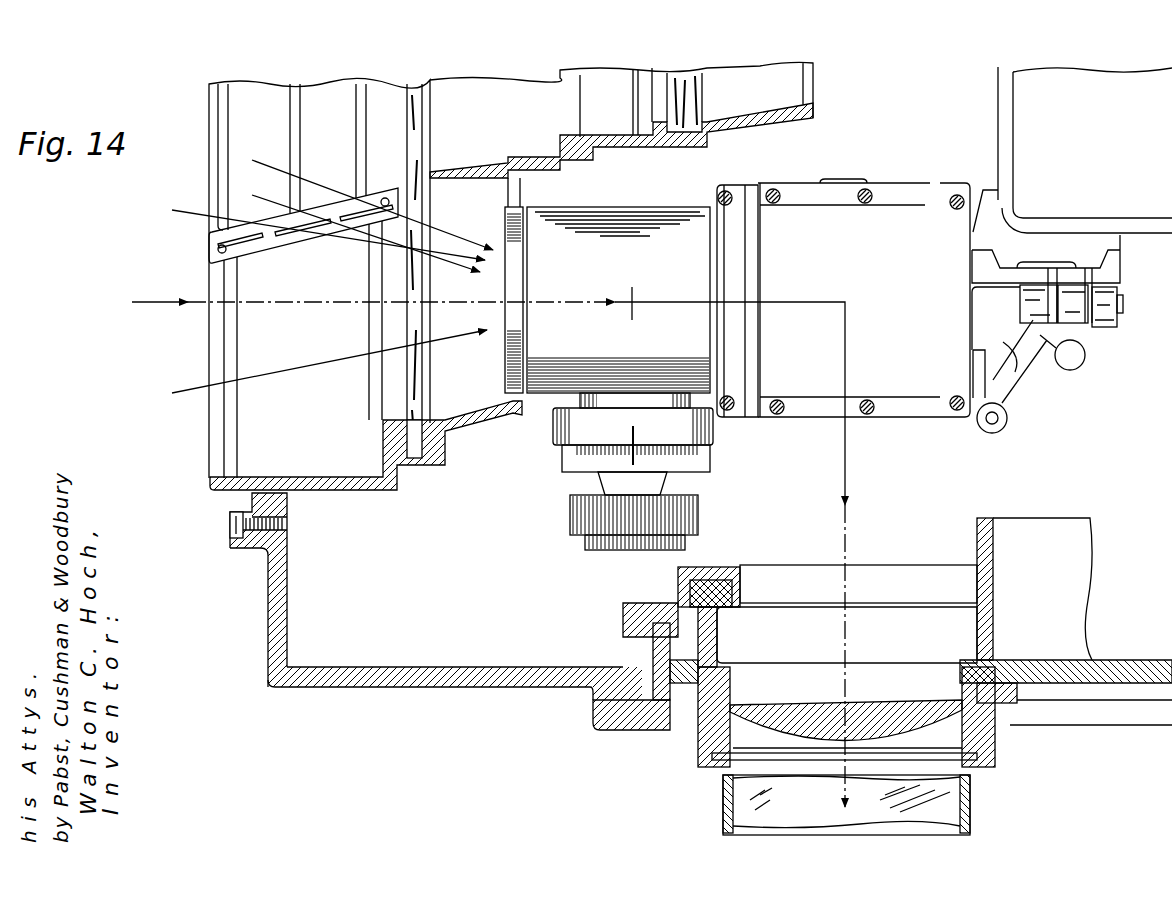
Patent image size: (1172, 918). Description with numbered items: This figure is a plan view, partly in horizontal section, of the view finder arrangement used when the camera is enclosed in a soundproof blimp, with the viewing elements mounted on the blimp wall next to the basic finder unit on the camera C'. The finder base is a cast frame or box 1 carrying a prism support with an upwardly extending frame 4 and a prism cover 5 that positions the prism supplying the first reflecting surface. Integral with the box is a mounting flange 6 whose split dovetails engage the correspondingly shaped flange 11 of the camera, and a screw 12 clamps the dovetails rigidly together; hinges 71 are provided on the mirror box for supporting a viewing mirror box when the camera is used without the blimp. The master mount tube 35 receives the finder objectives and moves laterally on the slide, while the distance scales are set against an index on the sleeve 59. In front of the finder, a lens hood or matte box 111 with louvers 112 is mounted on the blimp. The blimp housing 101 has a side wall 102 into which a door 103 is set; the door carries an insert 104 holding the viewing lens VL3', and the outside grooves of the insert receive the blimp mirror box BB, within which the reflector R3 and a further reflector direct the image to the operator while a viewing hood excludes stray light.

The lens hood or matte box 111 is at (313, 477).
The louvers 112 is at (255, 244).
The master mount tube 35 is at (607, 300).
The upwardly extending frame 4 is at (733, 280).
The prism cover 5 is at (882, 234).
The mounting flange 6 is at (1105, 272).
The flange of camera 11 is at (1010, 210).
The screw 12 is at (1081, 357).
The hinges 71 is at (1002, 422).
The cast frame or box 1 is at (1036, 382).
The sleeve 59 is at (565, 428).
The blimp housing 101 is at (385, 667).
The side wall 102 is at (513, 667).
The door 103 is at (985, 518).
The insert 104 is at (1000, 765).
The viewing lens VL3' is at (846, 709).
The reflector R3 is at (748, 808).
The blimp mirror box BB is at (975, 818).
The camera C' is at (1085, 150).